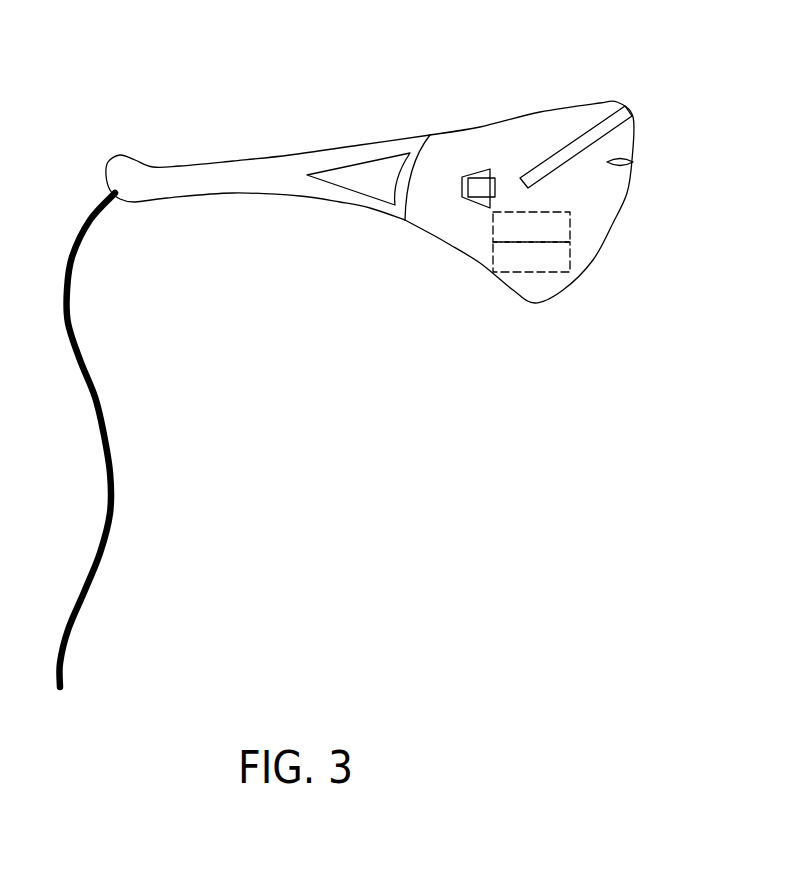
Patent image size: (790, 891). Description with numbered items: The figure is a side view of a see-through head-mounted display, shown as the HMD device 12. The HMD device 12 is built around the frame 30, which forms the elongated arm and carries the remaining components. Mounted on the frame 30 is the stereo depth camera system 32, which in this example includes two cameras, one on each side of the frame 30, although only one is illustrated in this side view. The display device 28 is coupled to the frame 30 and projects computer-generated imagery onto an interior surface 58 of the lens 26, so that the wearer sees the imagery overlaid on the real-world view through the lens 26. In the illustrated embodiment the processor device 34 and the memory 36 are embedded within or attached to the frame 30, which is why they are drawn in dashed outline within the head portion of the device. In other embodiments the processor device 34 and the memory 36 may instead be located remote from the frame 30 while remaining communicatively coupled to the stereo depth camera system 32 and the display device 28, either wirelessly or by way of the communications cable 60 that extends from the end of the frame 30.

The see-through HMD device 12 is at (288, 47).
The lens 26 is at (627, 193).
The display device 28 is at (630, 110).
The frame 30 is at (435, 238).
The stereo depth camera system 32 is at (484, 171).
The processor device 34 is at (545, 237).
The memory 36 is at (545, 269).
The interior surface 58 is at (633, 166).
The communications cable 60 is at (105, 418).